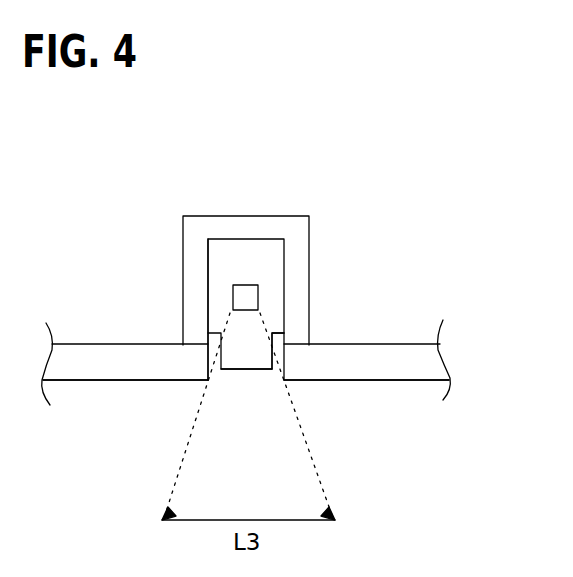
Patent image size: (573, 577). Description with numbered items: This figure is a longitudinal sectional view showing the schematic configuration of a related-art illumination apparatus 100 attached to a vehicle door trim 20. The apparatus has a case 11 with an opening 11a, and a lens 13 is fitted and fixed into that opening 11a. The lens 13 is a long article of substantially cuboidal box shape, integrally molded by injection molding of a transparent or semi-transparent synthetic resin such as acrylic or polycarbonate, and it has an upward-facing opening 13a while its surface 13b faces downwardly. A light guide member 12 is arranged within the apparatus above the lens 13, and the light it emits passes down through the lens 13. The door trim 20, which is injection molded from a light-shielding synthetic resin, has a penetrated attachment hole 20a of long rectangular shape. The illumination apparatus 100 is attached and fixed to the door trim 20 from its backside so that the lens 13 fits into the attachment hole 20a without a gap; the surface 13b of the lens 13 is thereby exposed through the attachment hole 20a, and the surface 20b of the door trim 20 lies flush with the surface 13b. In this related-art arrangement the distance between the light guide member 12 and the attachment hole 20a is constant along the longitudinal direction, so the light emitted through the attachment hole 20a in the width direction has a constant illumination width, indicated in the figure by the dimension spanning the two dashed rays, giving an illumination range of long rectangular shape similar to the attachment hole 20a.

The illumination apparatus 100 is at (522, 121).
The case 11 is at (203, 215).
The opening 11a is at (208, 313).
The light guide member 12 is at (247, 285).
The lens 13 is at (232, 381).
The opening 13a is at (253, 381).
The surface 13b is at (272, 333).
The door trim 20 is at (87, 381).
The attachment hole 20a is at (210, 370).
The surface 20b is at (373, 381).